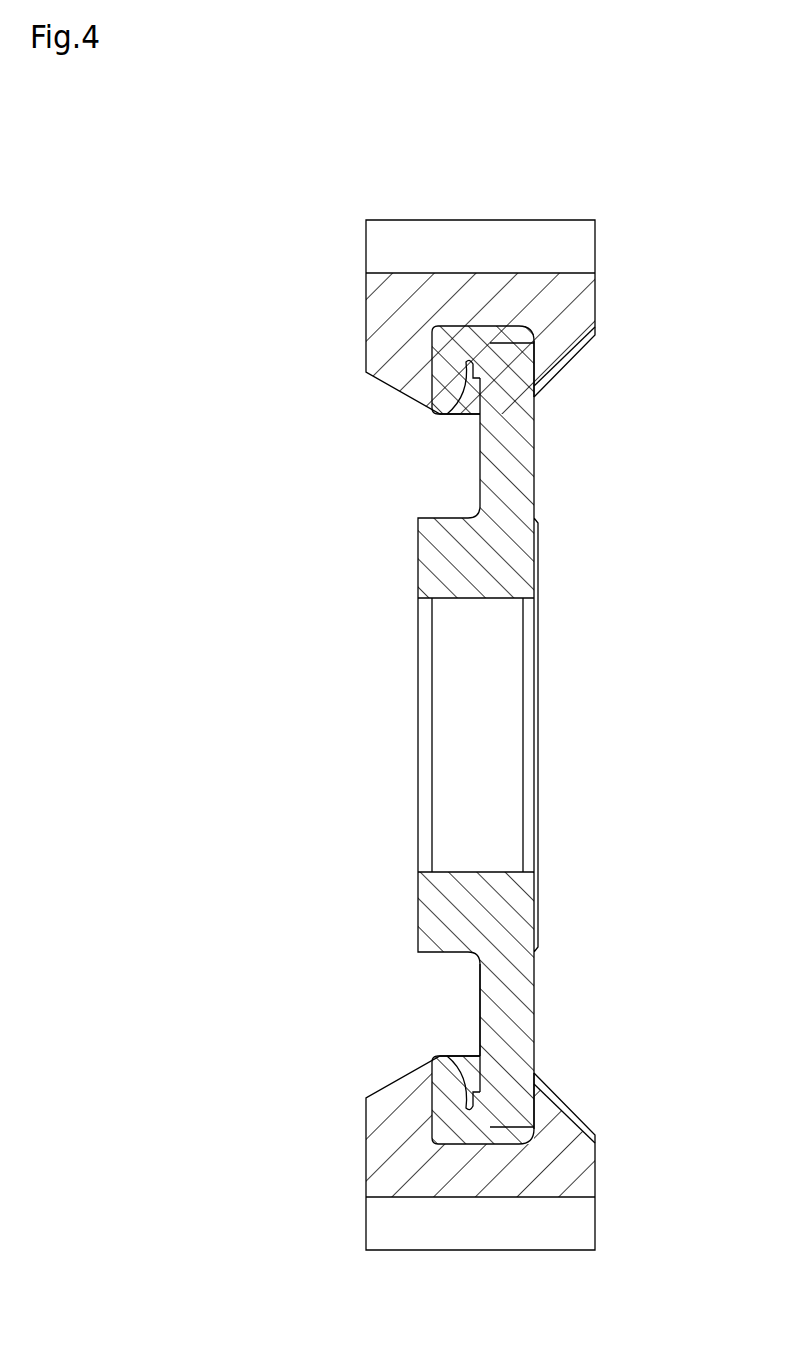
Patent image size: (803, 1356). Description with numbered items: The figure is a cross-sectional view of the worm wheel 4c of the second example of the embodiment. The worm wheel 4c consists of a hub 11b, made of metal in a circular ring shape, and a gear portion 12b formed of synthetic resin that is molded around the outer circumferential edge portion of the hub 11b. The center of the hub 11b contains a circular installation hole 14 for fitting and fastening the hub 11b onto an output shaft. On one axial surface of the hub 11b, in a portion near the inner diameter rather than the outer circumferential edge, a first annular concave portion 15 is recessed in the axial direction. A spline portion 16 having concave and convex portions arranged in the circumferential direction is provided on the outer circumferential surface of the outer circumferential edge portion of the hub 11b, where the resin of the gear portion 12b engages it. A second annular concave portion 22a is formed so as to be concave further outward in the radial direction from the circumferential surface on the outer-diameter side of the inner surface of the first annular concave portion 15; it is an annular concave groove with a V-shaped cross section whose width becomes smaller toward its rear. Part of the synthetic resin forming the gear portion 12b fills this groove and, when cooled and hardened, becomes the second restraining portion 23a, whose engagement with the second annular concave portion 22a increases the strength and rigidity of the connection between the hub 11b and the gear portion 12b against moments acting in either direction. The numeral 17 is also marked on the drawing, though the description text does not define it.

The worm wheel 4c is at (587, 213).
The mounting surface 17 is at (403, 253).
The spline portion 16 is at (507, 343).
The gear portion 12b is at (565, 298).
The hub 11b is at (524, 625).
The second annular concave portion 22a is at (468, 362).
The installation hole 14 is at (480, 598).
The first annular concave portion 15 is at (479, 988).
The second restraining portion 23a is at (468, 1104).